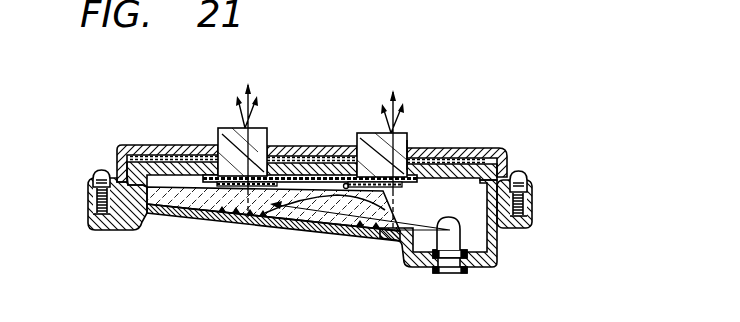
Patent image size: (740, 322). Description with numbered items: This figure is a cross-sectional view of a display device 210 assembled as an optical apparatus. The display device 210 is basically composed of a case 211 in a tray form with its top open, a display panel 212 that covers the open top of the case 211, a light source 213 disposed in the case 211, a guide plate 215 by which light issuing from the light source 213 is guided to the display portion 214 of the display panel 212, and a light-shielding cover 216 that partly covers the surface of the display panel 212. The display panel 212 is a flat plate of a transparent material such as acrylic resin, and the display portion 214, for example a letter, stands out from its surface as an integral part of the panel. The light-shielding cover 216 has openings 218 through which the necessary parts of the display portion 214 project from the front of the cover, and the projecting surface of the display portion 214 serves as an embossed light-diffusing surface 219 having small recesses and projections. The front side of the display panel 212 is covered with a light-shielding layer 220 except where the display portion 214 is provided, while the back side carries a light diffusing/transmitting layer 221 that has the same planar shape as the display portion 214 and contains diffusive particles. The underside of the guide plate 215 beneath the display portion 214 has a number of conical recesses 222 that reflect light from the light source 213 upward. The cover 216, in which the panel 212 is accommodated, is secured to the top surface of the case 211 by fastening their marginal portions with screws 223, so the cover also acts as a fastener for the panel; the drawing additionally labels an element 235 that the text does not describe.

The display device 210 is at (508, 123).
The case 211 is at (413, 258).
The display panel 212 is at (505, 177).
The light source 213 is at (458, 238).
The display portion 214 is at (208, 130).
The guide plate 215 is at (314, 215).
The light-shielding cover 216 is at (482, 152).
The openings 218 is at (408, 145).
The light-diffusing surface 219 is at (225, 128).
The light-shielding layer 220 is at (152, 157).
The light diffusing/transmitting layer 221 is at (346, 185).
The conical recesses 222 is at (273, 218).
The screws 223 is at (98, 173).
The holder strip 235 is at (421, 183).